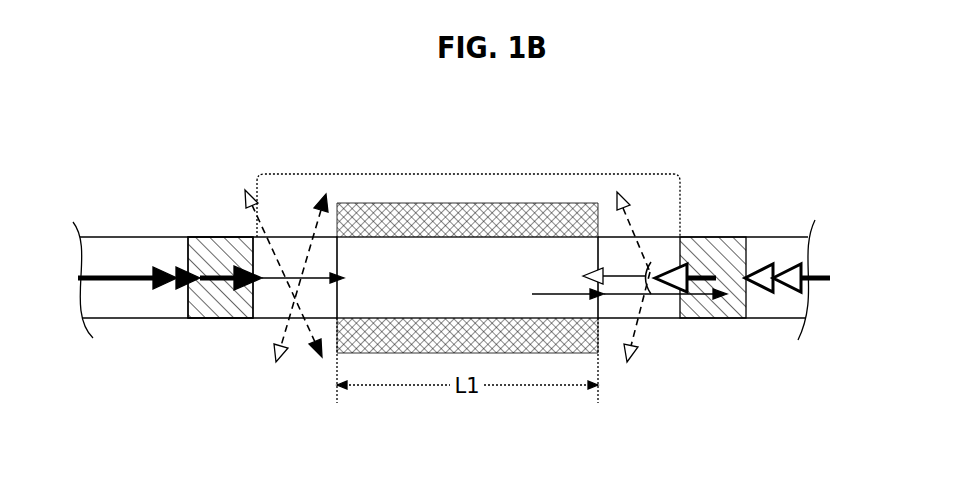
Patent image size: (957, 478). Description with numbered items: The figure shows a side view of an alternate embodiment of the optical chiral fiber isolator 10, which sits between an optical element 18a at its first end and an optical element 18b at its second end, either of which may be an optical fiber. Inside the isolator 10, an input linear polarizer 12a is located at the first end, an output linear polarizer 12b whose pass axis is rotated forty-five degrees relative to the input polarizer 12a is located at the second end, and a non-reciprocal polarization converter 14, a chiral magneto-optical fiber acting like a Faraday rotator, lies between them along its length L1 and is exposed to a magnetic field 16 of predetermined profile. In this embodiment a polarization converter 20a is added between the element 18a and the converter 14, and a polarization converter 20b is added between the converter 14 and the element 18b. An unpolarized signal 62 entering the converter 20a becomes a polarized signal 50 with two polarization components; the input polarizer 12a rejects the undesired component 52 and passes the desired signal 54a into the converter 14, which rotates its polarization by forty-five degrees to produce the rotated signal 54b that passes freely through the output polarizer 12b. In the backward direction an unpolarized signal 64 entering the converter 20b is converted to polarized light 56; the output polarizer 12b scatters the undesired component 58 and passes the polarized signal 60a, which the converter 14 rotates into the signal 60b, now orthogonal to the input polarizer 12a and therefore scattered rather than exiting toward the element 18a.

The optical chiral fiber isolator 10 is at (497, 174).
The input linear polarizer 12a is at (268, 318).
The output linear polarizer 12b is at (660, 320).
The non-reciprocal polarization converter 14 is at (386, 277).
The magnetic field 16 is at (581, 228).
The optical element 18a is at (148, 237).
The optical element 18b is at (770, 237).
The polarization converter 20a is at (237, 237).
The polarization converter 20b is at (747, 237).
The polarized signal 50 is at (227, 267).
The undesired polarization component 52 is at (330, 194).
The signal of desired polarization 54a is at (347, 277).
The rotated polarized signal 54b is at (578, 296).
The backward travelling light 56 is at (687, 250).
The undesired polarization component 58 is at (620, 195).
The polarized signal 60a is at (583, 272).
The rotated polarized signal 60b is at (247, 189).
The unpolarized signal 62 is at (145, 285).
The unpolarized signal 64 is at (812, 300).